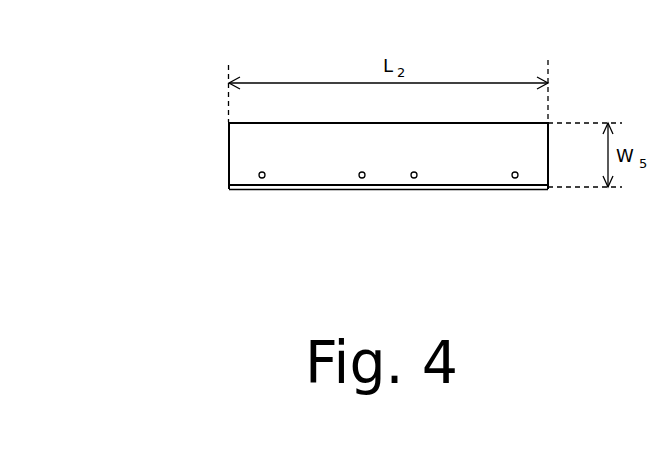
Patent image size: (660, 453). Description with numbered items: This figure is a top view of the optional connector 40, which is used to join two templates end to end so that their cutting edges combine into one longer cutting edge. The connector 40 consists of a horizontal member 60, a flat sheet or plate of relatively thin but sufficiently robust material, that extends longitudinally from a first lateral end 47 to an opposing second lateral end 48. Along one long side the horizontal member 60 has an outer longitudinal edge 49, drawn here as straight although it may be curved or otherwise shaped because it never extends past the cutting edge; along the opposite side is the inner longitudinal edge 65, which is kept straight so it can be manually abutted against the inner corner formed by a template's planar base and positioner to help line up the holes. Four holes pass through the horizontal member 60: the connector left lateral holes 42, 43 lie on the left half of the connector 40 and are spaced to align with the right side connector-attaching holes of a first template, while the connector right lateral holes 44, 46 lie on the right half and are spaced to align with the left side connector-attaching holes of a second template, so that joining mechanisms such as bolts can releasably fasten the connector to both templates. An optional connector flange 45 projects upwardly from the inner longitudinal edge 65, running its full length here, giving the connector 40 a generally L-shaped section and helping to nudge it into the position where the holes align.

The connector 40 is at (330, 58).
The connector left lateral hole 42 is at (260, 178).
The connector left lateral hole 43 is at (360, 178).
The connector right lateral hole 44 is at (416, 178).
The connector flange 45 is at (226, 187).
The connector right lateral hole 46 is at (517, 178).
The first lateral end 47 is at (548, 150).
The second lateral end 48 is at (229, 143).
The outer longitudinal edge 49 is at (424, 123).
The horizontal member 60 is at (210, 161).
The inner longitudinal edge 65 is at (390, 190).